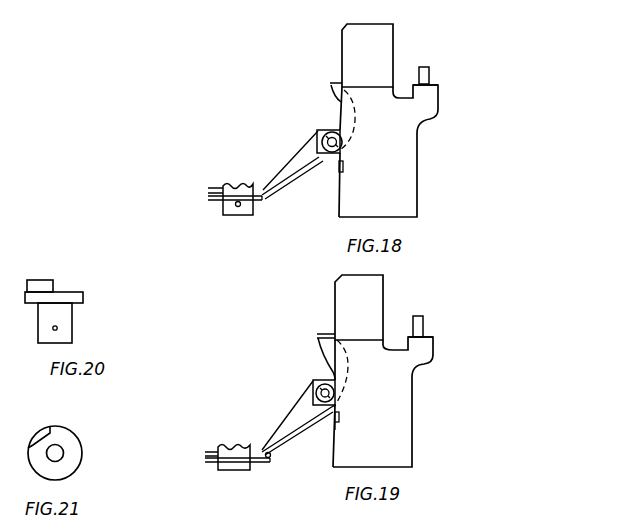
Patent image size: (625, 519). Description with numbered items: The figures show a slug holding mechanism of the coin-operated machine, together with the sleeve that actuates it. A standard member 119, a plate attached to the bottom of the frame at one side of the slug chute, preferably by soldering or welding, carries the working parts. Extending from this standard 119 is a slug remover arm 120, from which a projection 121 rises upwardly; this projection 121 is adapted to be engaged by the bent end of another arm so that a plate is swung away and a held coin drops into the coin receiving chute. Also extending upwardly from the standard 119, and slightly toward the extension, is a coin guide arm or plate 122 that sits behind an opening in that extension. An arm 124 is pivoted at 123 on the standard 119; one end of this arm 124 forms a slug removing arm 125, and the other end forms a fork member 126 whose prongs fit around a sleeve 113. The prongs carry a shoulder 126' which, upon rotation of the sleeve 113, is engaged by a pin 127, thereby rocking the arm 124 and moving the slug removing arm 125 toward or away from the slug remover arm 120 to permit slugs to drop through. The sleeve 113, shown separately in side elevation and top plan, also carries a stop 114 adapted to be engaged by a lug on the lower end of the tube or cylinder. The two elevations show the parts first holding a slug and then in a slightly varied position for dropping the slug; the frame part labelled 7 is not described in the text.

In FIG. 19, the frame 7 is at (324, 424).
In FIG. 18, the sleeve 113 is at (228, 182).
In FIG. 19, the sleeve 113 is at (241, 471).
In FIG. 20, the sleeve 113 is at (40, 330).
In FIG. 21, the sleeve 113 is at (77, 451).
In FIG. 20, the stop 114 is at (40, 285).
In FIG. 21, the stop 114 is at (48, 427).
In FIG. 18, the standard member 119 is at (388, 151).
In FIG. 19, the standard member 119 is at (383, 402).
In FIG. 18, the slug remover arm 120 is at (432, 82).
In FIG. 19, the slug remover arm 120 is at (429, 337).
In FIG. 18, the projection 121 is at (427, 66).
In FIG. 19, the projection 121 is at (419, 316).
In FIG. 18, the coin guide arm 122 is at (367, 55).
In FIG. 19, the coin guide arm 122 is at (359, 307).
In FIG. 18, the pivot 123 is at (318, 132).
In FIG. 19, the pivot 123 is at (312, 388).
In FIG. 18, the arm 124 is at (294, 154).
In FIG. 19, the arm 124 is at (290, 417).
In FIG. 18, the slug removing arm 125 is at (331, 84).
In FIG. 19, the slug removing arm 125 is at (317, 336).
In FIG. 18, the fork member 126 is at (222, 211).
In FIG. 19, the fork member 126 is at (231, 474).
In FIG. 18, the shoulder 126' is at (276, 212).
In FIG. 19, the shoulder 126' is at (288, 483).
In FIG. 18, the pin 127 is at (238, 207).
In FIG. 19, the pin 127 is at (270, 459).
In FIG. 20, the pin 127 is at (58, 328).